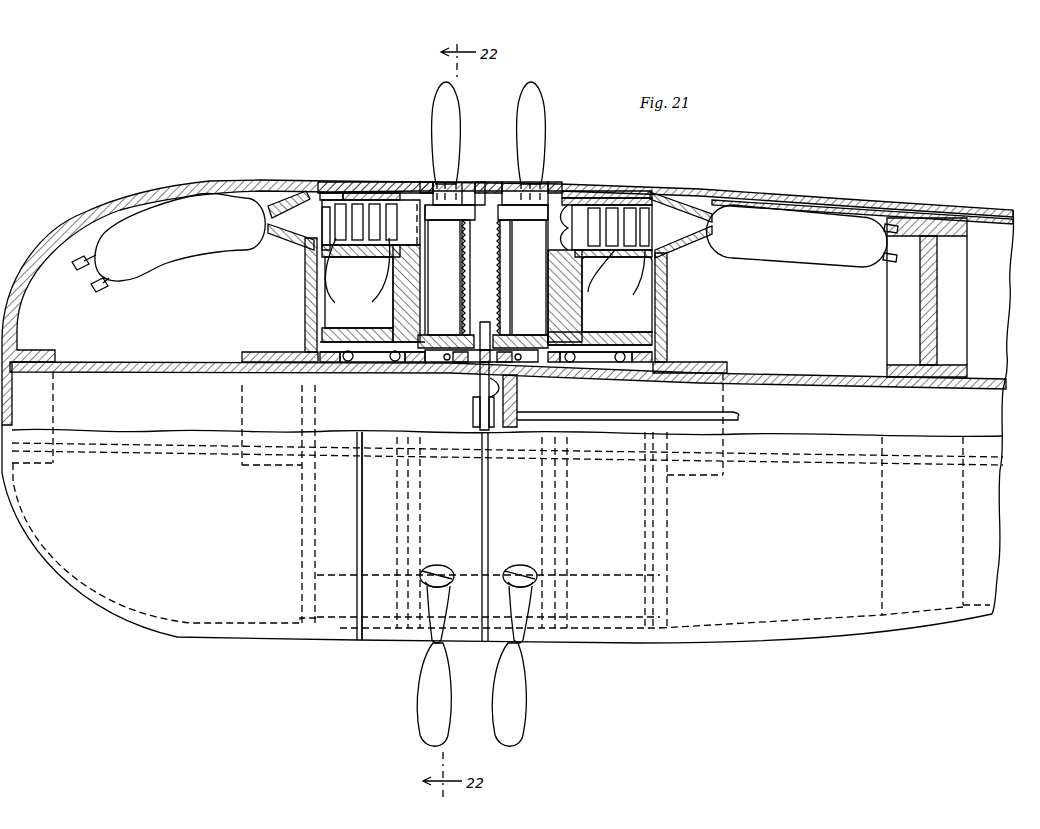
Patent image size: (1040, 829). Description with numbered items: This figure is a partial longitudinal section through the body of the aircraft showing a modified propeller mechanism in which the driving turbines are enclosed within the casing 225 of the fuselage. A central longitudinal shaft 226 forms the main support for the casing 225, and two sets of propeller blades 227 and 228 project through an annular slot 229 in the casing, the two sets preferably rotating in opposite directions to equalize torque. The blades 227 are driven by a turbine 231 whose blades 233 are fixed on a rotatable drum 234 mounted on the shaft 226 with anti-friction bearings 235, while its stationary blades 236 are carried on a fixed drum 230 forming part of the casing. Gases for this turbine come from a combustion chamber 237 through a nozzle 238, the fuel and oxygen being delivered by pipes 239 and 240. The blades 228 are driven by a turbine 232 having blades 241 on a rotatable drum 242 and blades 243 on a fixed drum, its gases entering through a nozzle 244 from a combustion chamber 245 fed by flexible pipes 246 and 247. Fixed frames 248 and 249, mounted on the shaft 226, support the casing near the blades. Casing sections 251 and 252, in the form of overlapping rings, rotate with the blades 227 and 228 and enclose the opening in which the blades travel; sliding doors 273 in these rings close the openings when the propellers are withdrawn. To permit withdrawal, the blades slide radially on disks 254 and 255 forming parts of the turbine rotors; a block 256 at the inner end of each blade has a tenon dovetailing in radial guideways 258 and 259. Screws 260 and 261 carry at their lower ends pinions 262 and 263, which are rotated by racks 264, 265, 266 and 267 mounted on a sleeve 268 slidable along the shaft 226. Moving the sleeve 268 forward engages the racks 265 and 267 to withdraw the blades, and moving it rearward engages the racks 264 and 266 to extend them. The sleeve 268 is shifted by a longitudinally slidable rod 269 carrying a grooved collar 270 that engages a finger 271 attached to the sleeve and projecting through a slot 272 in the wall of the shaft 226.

The casing of the fuselage 225 is at (231, 180).
The central longitudinal shaft 226 is at (153, 362).
The propeller blades 227 is at (436, 98).
The propeller blades 228 is at (536, 105).
The annular slot 229 is at (427, 184).
The fixed drum 230 is at (342, 182).
The turbine 231 is at (358, 255).
The turbine 232 is at (613, 244).
The blades 233 is at (376, 282).
The rotatable drum 234 is at (303, 250).
The anti-friction bearings 235 is at (386, 333).
The blades 236 is at (360, 195).
The combustion chamber 237 is at (180, 237).
The nozzle 238 is at (302, 205).
The pipe 239 is at (79, 272).
The pipe 240 is at (99, 290).
The blades 241 is at (643, 250).
The rotatable drum 242 is at (670, 257).
The blades 243 is at (604, 190).
The nozzle 244 is at (670, 222).
The combustion chamber 245 is at (767, 213).
The flexible pipe 246 is at (883, 262).
The flexible pipe 247 is at (895, 226).
The fixed frame 248 is at (305, 325).
The fixed frame 249 is at (667, 315).
The casing section 251 is at (479, 181).
The casing section 252 is at (500, 180).
The disk 254 is at (425, 258).
The disk 255 is at (547, 251).
The block 256 is at (443, 216).
The radial guideway 258 is at (428, 290).
The radial guideway 259 is at (548, 308).
The screw 260 is at (462, 283).
The screw 261 is at (548, 313).
The pinion 262 is at (459, 338).
The pinion 263 is at (505, 341).
The rack 264 is at (920, 328).
The rack 265 is at (483, 350).
The rack 266 is at (495, 310).
The rack 267 is at (525, 216).
The sleeve 268 is at (488, 380).
The longitudinally slidable rod 269 is at (648, 412).
The grooved collar 270 is at (473, 423).
The finger 271 is at (473, 403).
The slot 272 is at (517, 399).
The sliding doors 273 is at (428, 184).